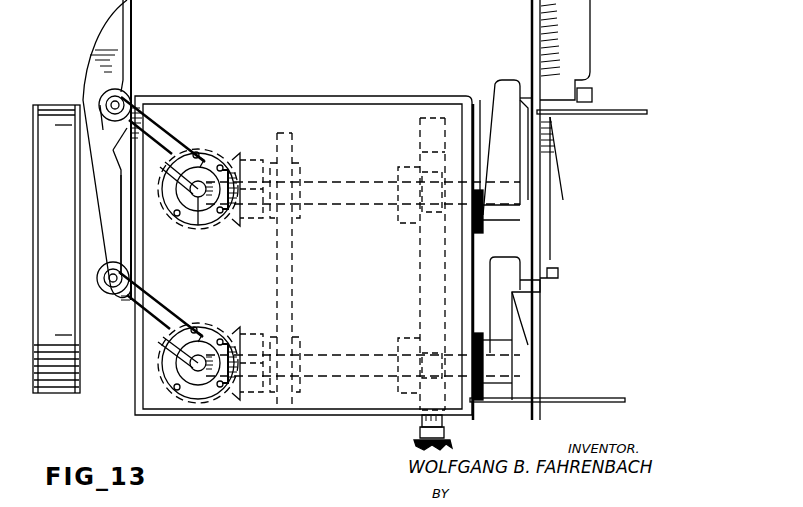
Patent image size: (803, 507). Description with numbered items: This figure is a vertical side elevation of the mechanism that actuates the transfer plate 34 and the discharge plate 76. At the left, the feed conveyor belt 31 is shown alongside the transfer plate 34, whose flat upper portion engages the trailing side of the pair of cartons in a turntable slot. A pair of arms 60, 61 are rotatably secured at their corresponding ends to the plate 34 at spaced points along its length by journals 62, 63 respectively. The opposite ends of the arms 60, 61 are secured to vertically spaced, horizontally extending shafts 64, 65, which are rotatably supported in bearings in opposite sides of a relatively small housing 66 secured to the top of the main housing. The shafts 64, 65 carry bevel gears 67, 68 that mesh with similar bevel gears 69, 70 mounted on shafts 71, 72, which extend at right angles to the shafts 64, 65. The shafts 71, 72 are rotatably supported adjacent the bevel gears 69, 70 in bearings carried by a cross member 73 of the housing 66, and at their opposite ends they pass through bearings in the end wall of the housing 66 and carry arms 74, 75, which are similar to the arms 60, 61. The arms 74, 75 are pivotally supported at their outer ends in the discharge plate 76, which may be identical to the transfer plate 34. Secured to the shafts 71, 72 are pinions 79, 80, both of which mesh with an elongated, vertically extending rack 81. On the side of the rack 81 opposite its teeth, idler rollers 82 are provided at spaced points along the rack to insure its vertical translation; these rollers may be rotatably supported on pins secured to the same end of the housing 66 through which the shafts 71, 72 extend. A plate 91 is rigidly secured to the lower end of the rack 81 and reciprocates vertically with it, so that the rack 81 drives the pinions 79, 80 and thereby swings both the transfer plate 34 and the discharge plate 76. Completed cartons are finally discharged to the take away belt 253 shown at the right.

The feed conveyor belt 31 is at (68, 179).
The transfer plate 34 is at (126, 43).
The arm 60 is at (162, 133).
The arm 61 is at (148, 294).
The journal 62 is at (119, 101).
The journal 63 is at (117, 277).
The shaft 64 is at (201, 212).
The shaft 65 is at (196, 372).
The housing 66 is at (306, 96).
The bevel gear 67 is at (208, 155).
The bevel gear 68 is at (208, 324).
The bevel gear 69 is at (240, 156).
The bevel gear 70 is at (232, 333).
The shaft 71 is at (338, 182).
The shaft 72 is at (300, 356).
The cross member 73 is at (298, 151).
The arm 74 is at (500, 88).
The arm 75 is at (505, 323).
The discharge plate 76 is at (582, 45).
The pinion 79 is at (420, 228).
The pinion 80 is at (420, 333).
The rack 81 is at (420, 272).
The idler rollers 82 is at (425, 170).
The plate 91 is at (418, 443).
The take away belt 253 is at (620, 109).